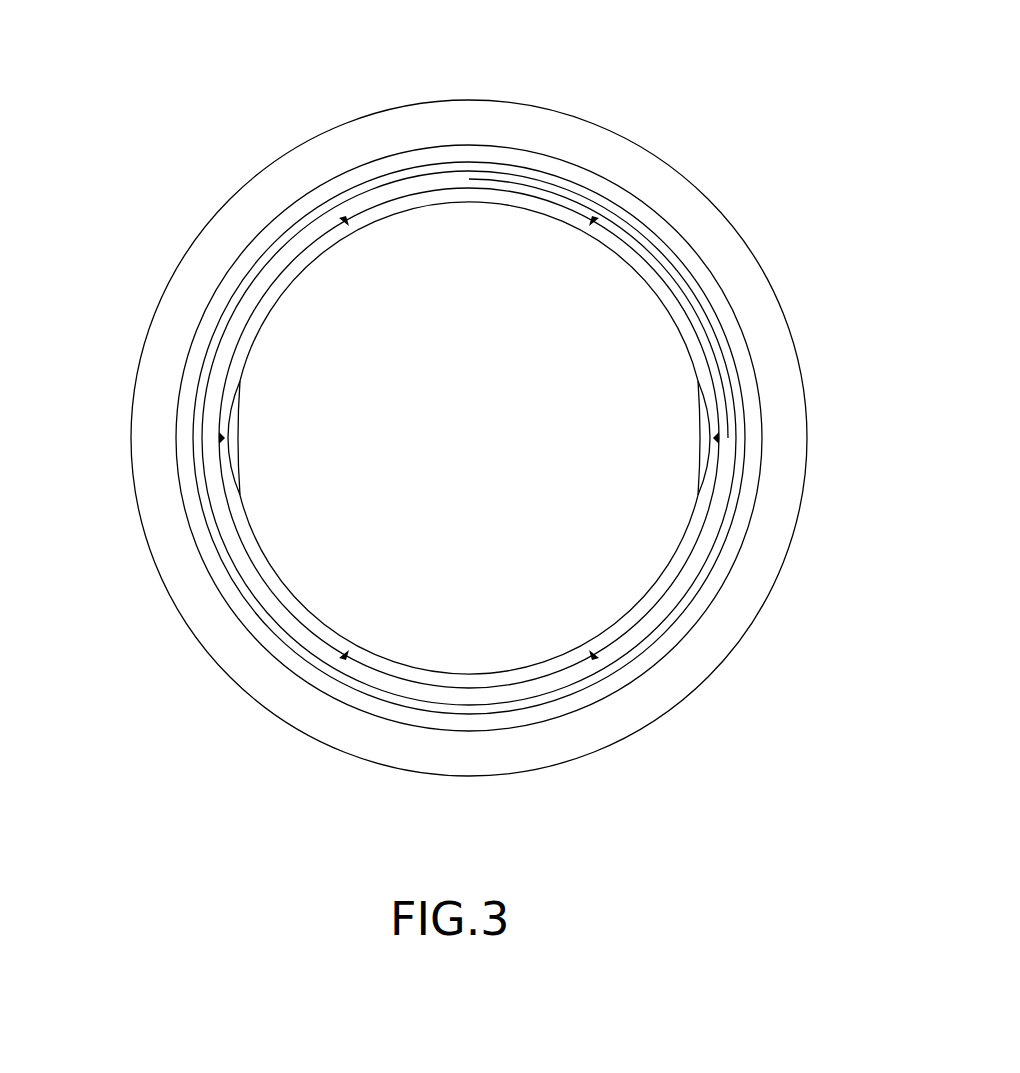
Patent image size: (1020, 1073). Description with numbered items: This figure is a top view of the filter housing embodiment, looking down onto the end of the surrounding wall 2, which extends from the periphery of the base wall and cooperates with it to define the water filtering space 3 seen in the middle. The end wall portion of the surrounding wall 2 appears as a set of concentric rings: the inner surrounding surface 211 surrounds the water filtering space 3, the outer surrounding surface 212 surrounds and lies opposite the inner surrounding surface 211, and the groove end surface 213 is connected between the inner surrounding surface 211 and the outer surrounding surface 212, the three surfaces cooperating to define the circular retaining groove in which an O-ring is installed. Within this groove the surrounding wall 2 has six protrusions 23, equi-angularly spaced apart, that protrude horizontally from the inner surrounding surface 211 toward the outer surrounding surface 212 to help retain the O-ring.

The surrounding wall 2 is at (205, 222).
The inner surrounding surface 211 is at (440, 191).
The outer surrounding surface 212 is at (487, 170).
The groove end surface 213 is at (517, 185).
The protrusions 23 is at (343, 222).
The water filtering space 3 is at (333, 391).